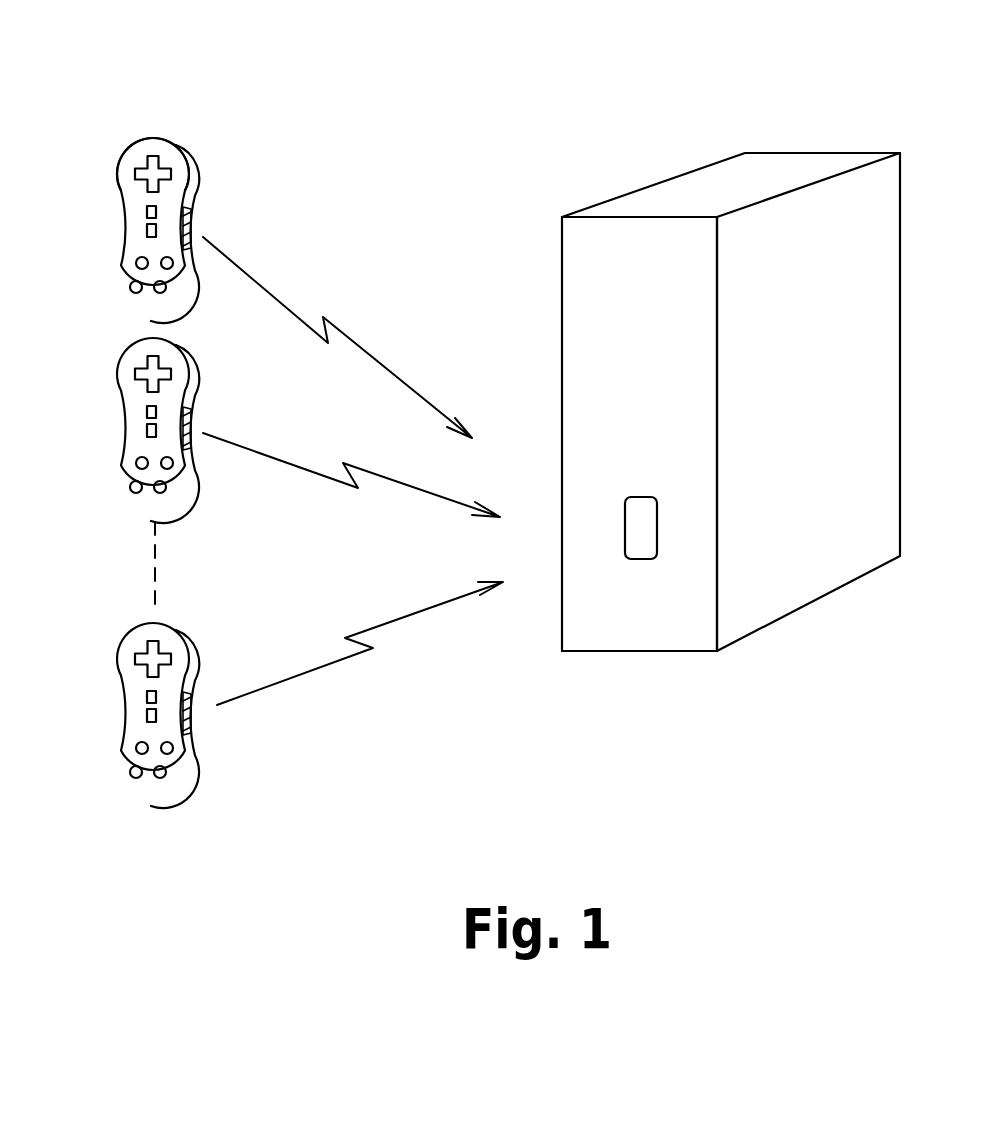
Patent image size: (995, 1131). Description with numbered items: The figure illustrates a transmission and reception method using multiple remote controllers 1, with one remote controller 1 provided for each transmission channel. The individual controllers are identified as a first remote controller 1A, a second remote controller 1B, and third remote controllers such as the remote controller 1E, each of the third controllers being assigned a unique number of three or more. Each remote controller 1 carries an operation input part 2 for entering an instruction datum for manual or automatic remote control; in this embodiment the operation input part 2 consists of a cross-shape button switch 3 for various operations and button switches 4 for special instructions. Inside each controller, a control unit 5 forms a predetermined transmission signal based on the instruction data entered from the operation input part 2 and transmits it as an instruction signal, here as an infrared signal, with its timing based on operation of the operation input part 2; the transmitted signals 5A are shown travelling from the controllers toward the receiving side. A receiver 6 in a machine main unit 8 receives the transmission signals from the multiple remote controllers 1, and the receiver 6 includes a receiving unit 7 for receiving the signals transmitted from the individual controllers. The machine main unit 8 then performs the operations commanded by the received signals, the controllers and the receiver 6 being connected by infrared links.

The remote controller 1 is at (118, 127).
The first remote controller 1A is at (128, 233).
The second remote controller 1B is at (130, 435).
The third remote controller 1E is at (130, 713).
The operation input part 2 is at (152, 135).
The cross-shape button switch 3 is at (162, 170).
The button switches 4 is at (167, 263).
The control unit 5 is at (190, 218).
The wireless signal 5A is at (403, 620).
The receiver 6 is at (688, 180).
The receiving unit 7 is at (637, 539).
The machine main unit 8 is at (678, 623).